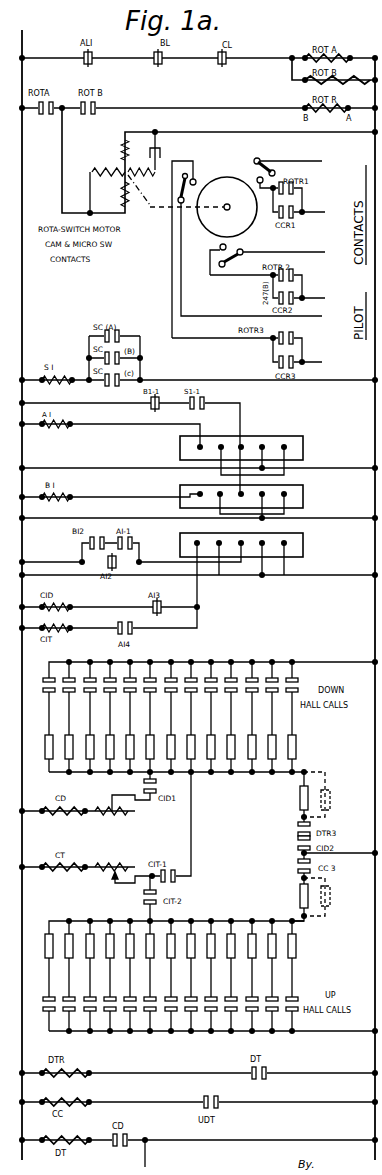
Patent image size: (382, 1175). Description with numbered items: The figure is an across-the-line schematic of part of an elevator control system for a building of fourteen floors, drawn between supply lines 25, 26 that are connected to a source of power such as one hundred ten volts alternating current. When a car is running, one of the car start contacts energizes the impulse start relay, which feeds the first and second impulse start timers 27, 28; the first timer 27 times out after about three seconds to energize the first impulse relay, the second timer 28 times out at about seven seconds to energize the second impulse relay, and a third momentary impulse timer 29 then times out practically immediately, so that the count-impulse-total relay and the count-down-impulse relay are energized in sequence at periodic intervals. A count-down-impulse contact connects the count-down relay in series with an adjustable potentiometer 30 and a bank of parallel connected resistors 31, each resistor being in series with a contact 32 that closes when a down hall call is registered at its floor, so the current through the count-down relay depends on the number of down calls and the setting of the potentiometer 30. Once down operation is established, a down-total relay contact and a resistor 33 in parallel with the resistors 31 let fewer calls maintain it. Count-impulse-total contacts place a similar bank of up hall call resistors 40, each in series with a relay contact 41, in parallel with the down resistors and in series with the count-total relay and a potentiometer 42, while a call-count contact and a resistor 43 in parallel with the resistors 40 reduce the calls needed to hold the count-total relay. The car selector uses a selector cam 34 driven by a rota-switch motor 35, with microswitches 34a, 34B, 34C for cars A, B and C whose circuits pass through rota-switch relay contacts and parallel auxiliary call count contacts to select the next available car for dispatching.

The line 25 is at (22, 38).
The line 26 is at (374, 46).
The first impulse start timer 27 is at (284, 441).
The second impulse start timer 28 is at (306, 501).
The momentary timer 29 is at (306, 551).
The adjustable potentiometer 30 is at (116, 819).
The parallel connected resistors 31 is at (303, 751).
The contact 32 is at (297, 695).
The resistor 33 is at (331, 807).
The selector cam 34 is at (219, 216).
The switch 34a is at (253, 169).
The switch 34B is at (242, 252).
The switch 34C is at (197, 187).
The rota-switch motor 35 is at (113, 168).
The up hall call resistors 40 is at (47, 951).
The relay contact 41 is at (46, 1011).
The potentiometer 42 is at (117, 872).
The resistor 43 is at (330, 898).